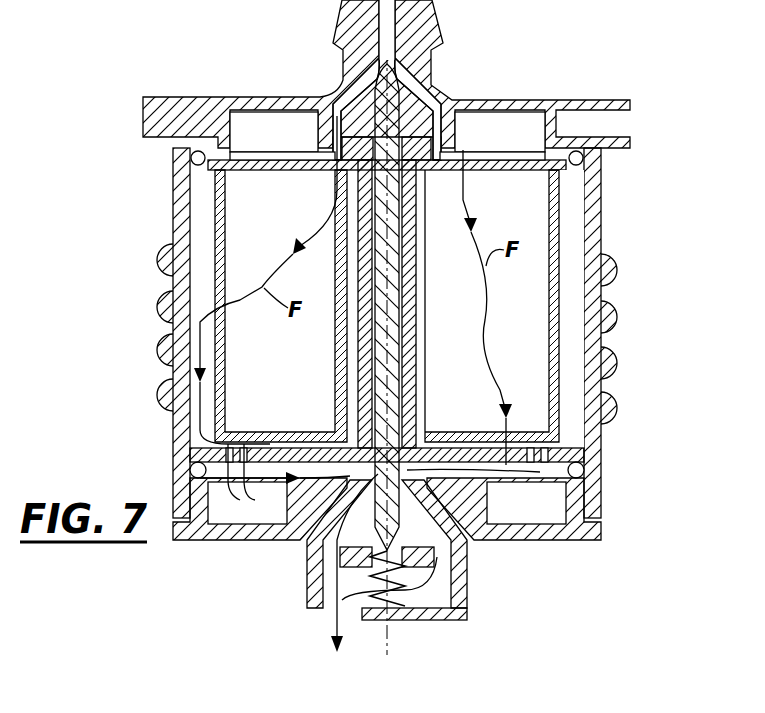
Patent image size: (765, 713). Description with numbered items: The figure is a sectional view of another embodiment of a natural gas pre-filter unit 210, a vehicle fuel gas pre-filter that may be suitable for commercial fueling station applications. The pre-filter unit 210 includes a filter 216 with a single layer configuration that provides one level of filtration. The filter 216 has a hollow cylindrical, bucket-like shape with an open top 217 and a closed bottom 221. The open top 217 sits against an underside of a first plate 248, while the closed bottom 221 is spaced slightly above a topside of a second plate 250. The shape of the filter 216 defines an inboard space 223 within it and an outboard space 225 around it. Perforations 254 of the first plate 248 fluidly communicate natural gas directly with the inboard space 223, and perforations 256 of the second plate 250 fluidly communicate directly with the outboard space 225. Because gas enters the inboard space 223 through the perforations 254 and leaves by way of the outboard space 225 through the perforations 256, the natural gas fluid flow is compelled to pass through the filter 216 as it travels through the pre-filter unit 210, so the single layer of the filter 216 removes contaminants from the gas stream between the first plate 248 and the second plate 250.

The natural gas pre-filter unit 210 is at (530, 68).
The perforations of the first plate 254 is at (473, 166).
The open top 217 is at (222, 172).
The inboard space 223 is at (293, 237).
The closed bottom 221 is at (287, 442).
The perforations of the second plate 256 is at (243, 463).
The second plate 250 is at (470, 462).
The first plate 248 is at (506, 168).
The filter 216 is at (566, 242).
The outboard space 225 is at (565, 317).